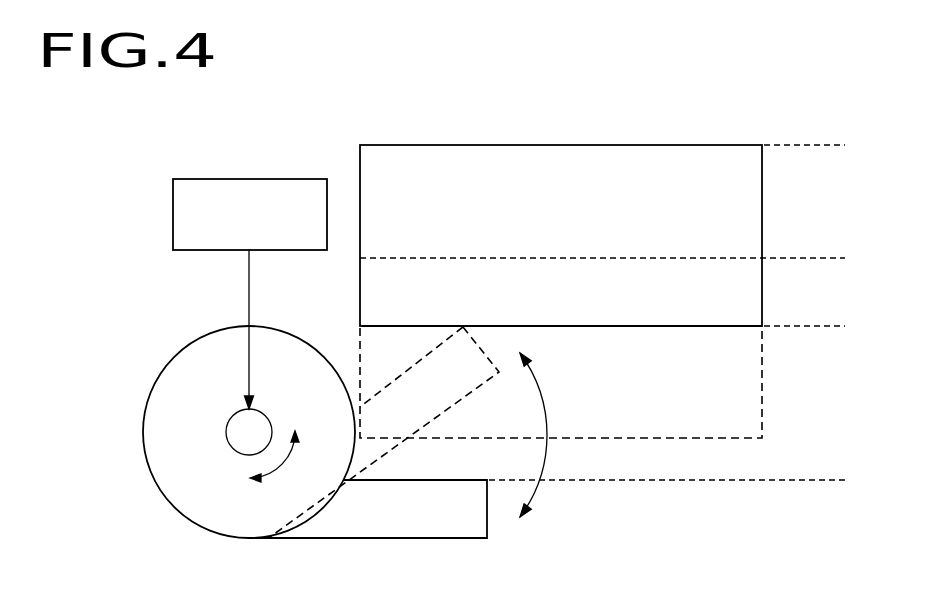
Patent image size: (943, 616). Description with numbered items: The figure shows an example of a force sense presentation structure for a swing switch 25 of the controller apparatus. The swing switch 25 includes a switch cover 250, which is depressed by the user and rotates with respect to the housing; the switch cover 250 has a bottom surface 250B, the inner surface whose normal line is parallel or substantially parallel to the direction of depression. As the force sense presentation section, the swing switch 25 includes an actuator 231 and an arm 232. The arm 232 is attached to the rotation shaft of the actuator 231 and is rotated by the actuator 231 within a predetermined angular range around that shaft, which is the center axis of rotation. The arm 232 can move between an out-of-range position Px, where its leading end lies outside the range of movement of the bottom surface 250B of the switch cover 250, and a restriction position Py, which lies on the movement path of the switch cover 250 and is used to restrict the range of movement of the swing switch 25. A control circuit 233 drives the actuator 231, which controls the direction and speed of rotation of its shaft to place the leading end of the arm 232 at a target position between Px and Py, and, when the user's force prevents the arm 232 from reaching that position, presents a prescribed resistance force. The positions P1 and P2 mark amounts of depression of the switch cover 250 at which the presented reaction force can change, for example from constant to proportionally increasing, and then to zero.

The swing switch 25 is at (380, 291).
The actuator 231 is at (224, 449).
The arm 232 is at (397, 513).
The control circuit 233 is at (267, 178).
The switch cover 250 is at (593, 144).
The bottom surface 250B is at (667, 324).
The depression amount P1 is at (827, 146).
The depression amount P2 is at (625, 258).
The out-of-range position Px is at (689, 480).
The restriction position Py is at (827, 325).